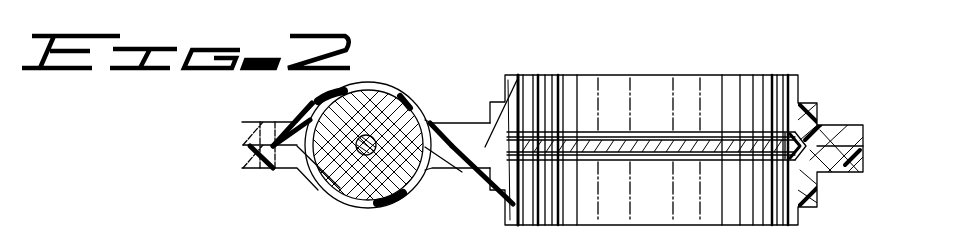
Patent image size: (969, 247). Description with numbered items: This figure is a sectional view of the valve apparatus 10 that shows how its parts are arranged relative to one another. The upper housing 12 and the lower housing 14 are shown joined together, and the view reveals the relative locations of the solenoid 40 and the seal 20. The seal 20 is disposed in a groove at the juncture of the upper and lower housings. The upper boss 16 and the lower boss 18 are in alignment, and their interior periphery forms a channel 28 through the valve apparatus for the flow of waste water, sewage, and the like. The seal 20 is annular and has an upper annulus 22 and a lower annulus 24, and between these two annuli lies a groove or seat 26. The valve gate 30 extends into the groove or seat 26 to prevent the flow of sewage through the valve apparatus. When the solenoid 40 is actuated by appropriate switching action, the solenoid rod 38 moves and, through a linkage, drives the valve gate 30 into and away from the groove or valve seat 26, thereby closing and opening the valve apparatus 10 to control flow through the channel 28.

The valve assembly 10 is at (466, 192).
The upper housing 12 is at (242, 133).
The lower housing 14 is at (242, 158).
The upper boss 16 is at (800, 98).
The lower boss 18 is at (800, 208).
The seal 20 is at (706, 128).
The upper annulus 22 is at (616, 133).
The lower annulus 24 is at (590, 158).
The groove or seat 26 is at (772, 163).
The channel 28 is at (522, 86).
The valve gate 30 is at (667, 150).
The solenoid rod 38 is at (376, 150).
The solenoid 40 is at (393, 104).